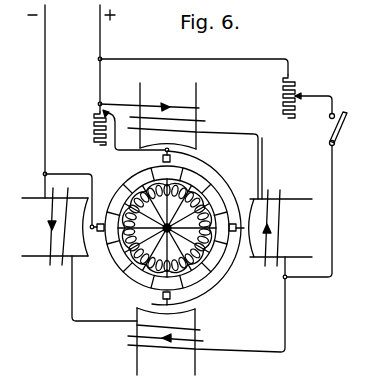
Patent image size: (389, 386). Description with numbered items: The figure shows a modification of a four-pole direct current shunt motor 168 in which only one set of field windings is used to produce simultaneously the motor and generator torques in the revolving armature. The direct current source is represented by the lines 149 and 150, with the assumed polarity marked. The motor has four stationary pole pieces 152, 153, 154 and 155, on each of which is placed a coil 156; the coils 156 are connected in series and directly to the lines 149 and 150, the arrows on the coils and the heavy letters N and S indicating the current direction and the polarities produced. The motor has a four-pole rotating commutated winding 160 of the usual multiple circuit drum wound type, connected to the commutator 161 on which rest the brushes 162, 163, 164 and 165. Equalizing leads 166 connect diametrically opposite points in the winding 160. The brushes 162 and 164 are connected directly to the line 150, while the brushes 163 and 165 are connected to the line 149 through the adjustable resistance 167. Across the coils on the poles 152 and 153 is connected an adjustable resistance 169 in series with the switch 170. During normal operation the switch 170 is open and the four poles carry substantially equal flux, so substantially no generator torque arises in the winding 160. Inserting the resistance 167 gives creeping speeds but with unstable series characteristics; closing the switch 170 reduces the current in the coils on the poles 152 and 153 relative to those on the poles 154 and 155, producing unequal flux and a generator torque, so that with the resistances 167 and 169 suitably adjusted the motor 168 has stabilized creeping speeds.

The line 149 is at (100, 40).
The line 150 is at (45, 40).
The stationary pole piece 152 is at (178, 116).
The stationary pole piece 153 is at (280, 241).
The stationary pole piece 154 is at (153, 341).
The stationary pole piece 155 is at (55, 216).
The coil 156 is at (129, 130).
The rotating commutated winding 160 is at (129, 217).
The commutator 161 is at (127, 180).
The brush 162 is at (99, 232).
The brush 163 is at (171, 160).
The brush 164 is at (233, 217).
The brush 165 is at (163, 297).
The equalizing lead 166 is at (166, 227).
The adjustable resistance 167 is at (94, 130).
The motor 168 is at (300, 81).
The adjustable resistance 169 is at (283, 91).
The switch 170 is at (331, 130).